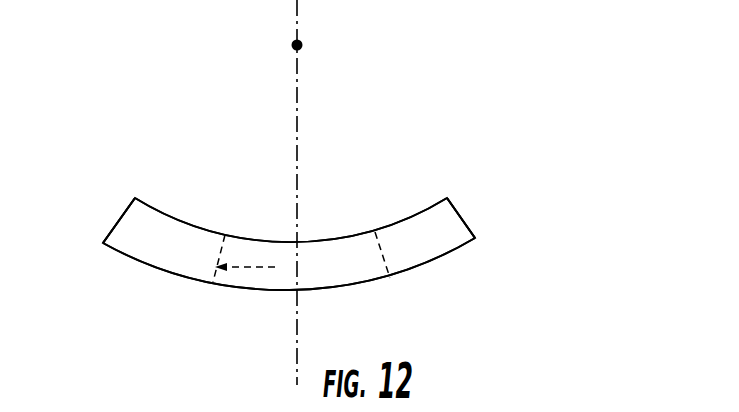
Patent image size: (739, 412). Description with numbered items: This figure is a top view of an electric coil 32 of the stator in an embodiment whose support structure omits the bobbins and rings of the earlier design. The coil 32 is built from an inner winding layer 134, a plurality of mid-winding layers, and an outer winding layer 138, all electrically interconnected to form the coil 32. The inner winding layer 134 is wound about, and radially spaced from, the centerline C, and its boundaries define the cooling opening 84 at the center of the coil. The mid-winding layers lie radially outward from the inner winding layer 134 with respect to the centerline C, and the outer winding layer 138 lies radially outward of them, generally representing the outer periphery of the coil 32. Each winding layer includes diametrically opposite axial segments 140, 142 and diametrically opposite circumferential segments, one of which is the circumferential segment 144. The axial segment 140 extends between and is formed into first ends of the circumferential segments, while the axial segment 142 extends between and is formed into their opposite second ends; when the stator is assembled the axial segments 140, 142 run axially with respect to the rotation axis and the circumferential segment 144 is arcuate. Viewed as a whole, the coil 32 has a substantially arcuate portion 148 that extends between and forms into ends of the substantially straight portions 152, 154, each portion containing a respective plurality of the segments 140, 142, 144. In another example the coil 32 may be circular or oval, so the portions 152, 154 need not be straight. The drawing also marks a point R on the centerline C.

The electric coil 32 is at (558, 145).
The cooling opening 84 is at (363, 250).
The inner winding layer 134 is at (263, 268).
The outer winding layer 138 is at (169, 203).
The axial segment 140 is at (130, 206).
The axial segment 142 is at (458, 212).
The circumferential segment 144 is at (437, 252).
The arcuate portion 148 is at (201, 242).
The straight portion 152 is at (110, 228).
The straight portion 154 is at (465, 229).
The radial center point R is at (303, 42).
The centerline C is at (298, 338).